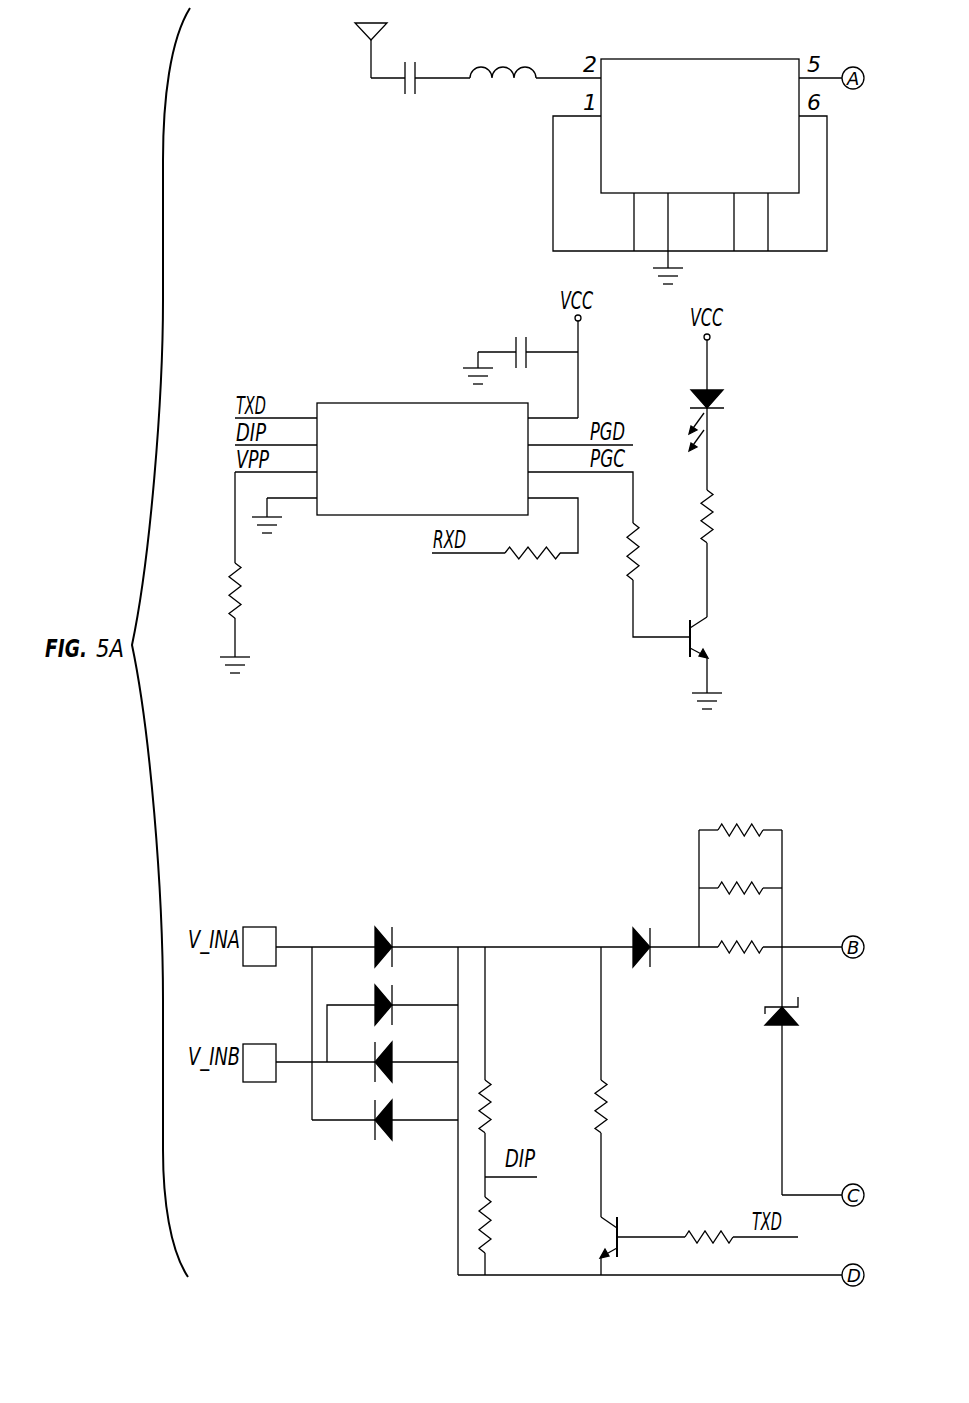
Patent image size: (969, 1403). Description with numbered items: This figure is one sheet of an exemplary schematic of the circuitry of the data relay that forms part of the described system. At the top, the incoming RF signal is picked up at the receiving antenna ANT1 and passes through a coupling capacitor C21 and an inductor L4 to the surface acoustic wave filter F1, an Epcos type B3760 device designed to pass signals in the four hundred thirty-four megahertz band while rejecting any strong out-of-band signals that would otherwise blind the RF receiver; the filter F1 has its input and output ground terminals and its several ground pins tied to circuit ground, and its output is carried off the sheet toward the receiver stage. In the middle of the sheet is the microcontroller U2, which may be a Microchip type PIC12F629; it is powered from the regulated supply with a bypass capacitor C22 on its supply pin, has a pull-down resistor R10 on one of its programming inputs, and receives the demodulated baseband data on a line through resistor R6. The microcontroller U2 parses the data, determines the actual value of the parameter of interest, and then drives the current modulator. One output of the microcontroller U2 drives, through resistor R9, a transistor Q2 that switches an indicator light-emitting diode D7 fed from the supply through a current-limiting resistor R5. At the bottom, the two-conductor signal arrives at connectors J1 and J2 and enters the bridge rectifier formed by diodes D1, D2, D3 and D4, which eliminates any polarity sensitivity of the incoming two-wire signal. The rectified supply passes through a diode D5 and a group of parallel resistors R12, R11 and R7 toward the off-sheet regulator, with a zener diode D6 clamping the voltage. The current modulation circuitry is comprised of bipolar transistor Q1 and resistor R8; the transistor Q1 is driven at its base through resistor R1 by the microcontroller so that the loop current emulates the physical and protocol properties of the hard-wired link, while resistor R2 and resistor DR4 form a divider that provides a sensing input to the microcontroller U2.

The antenna ANT1 is at (334, 40).
The capacitor 220pF C21 is at (411, 79).
The inductor 33nH L4 is at (495, 57).
The surface acoustic wave (SAW) filter F1 is at (700, 128).
The capacitor 0.1uF C22 is at (528, 351).
The microcontroller U2 is at (423, 459).
The resistor 10K R10 is at (255, 590).
The resistor 10K R9 is at (652, 553).
The resistor 10K R6 is at (532, 553).
The LED D7 is at (727, 420).
The resistor 1K R5 is at (723, 511).
The transistor MMBT3904/SOT Q2 is at (771, 641).
The connector V_INA J1 is at (259, 930).
The connector V_INB J2 is at (259, 1047).
The diode D1 is at (399, 935).
The diode D2 is at (399, 993).
The diode D3 is at (399, 1051).
The diode D4 is at (399, 1108).
The diode DL4007 D5 is at (660, 919).
The zener diode DL4739 9.1V 1W D6 is at (747, 1011).
The resistor 4.7K 1/4W R2 is at (530, 1091).
The resistor R8 is at (645, 1091).
The resistor 1K DR4 is at (506, 1221).
The bipolar transistor Q1 is at (572, 1235).
The resistor 1K R1 is at (711, 1218).
The resistor 2K 1/4W R12 is at (749, 805).
The resistor 2K 1/4W R11 is at (749, 863).
The resistor 2K 1/4W R7 is at (749, 922).